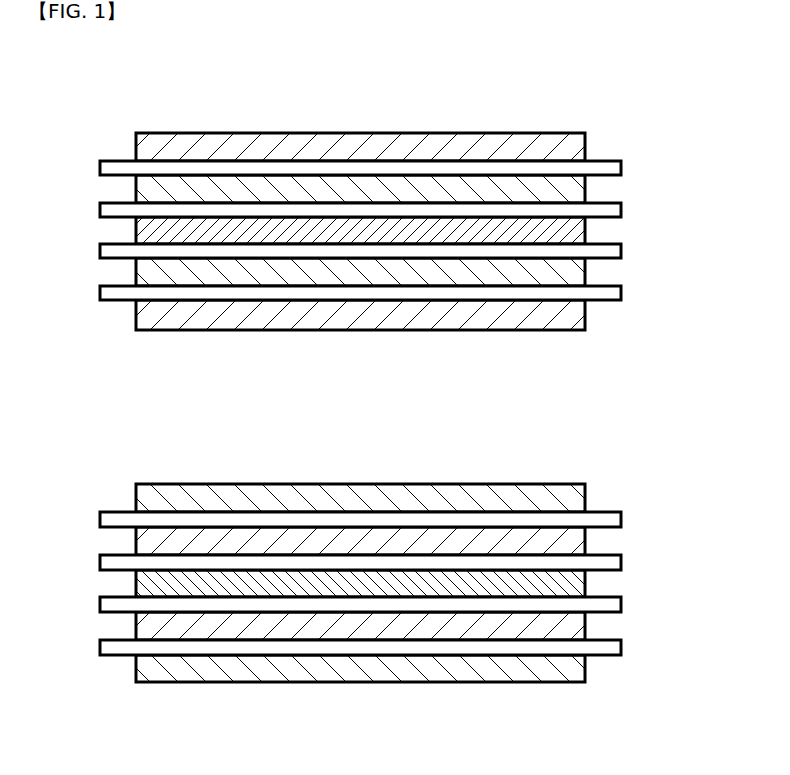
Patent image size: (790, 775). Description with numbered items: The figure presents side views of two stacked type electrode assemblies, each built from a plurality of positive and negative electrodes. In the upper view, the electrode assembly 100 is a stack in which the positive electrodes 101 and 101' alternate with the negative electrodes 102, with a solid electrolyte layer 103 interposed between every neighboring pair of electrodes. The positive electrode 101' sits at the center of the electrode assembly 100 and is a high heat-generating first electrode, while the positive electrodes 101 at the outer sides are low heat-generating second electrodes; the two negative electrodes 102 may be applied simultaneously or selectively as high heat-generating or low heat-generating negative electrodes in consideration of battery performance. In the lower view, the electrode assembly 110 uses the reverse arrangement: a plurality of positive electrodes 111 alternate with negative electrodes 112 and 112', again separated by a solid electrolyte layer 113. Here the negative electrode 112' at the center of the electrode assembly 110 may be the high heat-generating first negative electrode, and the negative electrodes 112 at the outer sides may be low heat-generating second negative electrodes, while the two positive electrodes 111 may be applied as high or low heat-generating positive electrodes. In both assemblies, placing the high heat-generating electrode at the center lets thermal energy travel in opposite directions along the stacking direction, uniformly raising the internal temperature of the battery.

The electrode assembly 100 is at (86, 110).
The positive electrode 101 is at (409, 231).
The negative electrode 102 is at (570, 195).
The positive electrode 101' is at (409, 230).
The solid electrolyte layer 103 is at (120, 172).
The electrode assembly 110 is at (86, 464).
The positive electrode 111 is at (570, 547).
The negative electrode 112 is at (409, 583).
The negative electrode 112' is at (409, 583).
The solid electrolyte layer 113 is at (120, 523).